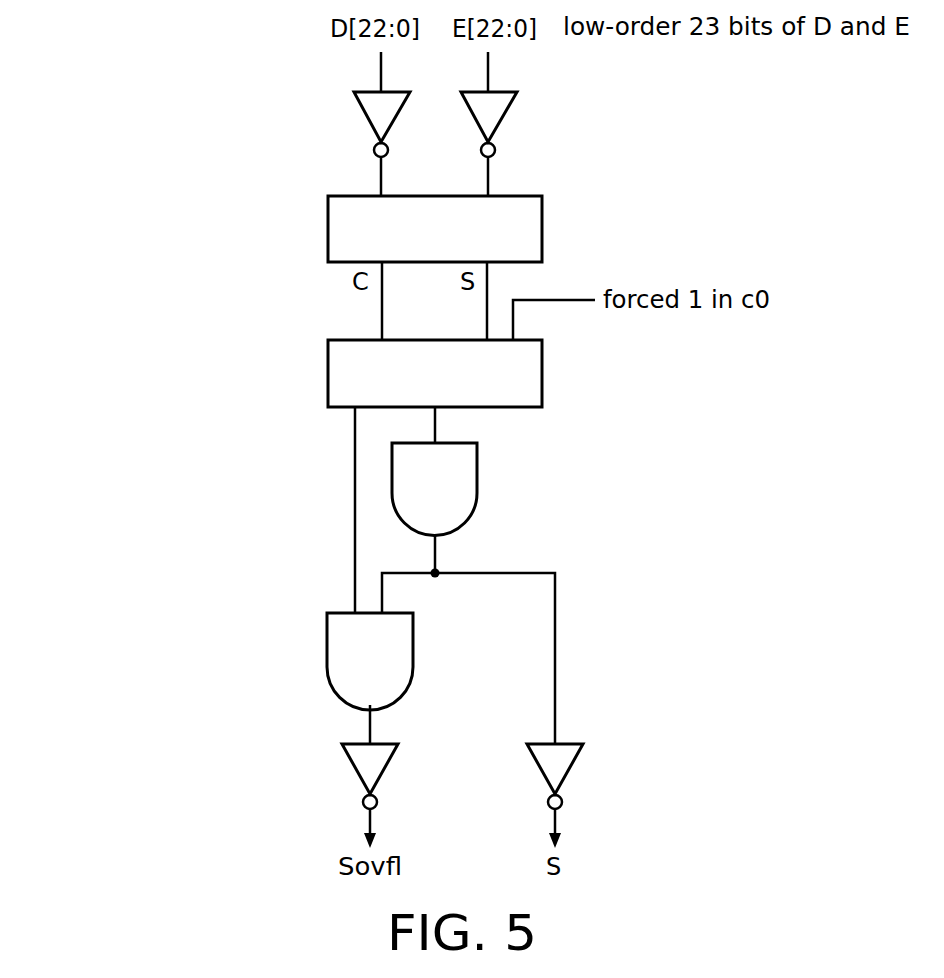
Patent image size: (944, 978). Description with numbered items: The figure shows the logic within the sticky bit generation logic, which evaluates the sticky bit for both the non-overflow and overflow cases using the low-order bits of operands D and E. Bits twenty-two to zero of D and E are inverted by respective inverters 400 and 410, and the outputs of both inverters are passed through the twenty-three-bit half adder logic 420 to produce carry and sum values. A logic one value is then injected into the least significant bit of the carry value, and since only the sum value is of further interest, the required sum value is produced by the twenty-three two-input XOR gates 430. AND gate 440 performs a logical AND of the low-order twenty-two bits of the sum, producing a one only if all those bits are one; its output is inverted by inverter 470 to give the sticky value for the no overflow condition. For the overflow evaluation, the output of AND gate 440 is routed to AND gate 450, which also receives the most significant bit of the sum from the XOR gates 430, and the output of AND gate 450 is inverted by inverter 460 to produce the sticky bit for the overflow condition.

The inverter 400 is at (354, 110).
The inverter 410 is at (514, 110).
The 23-bit half adder logic 420 is at (327, 214).
The 23 two-input XOR gates 430 is at (327, 357).
The AND gate 440 is at (478, 462).
The AND gate 450 is at (414, 632).
The inverter 460 is at (342, 762).
The inverter 470 is at (581, 762).